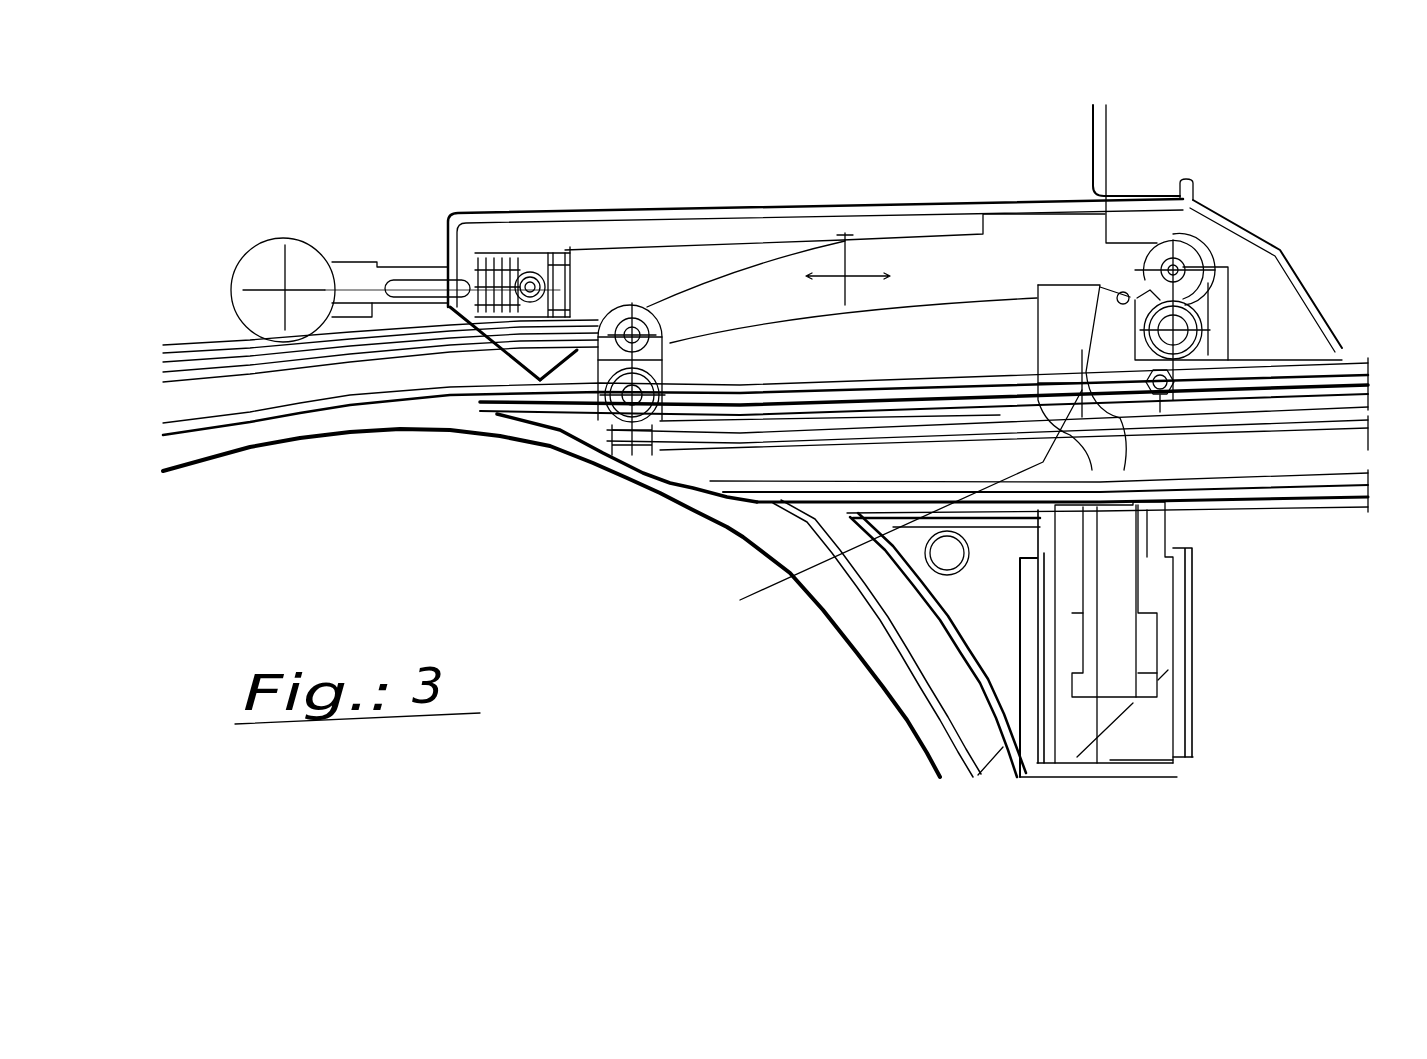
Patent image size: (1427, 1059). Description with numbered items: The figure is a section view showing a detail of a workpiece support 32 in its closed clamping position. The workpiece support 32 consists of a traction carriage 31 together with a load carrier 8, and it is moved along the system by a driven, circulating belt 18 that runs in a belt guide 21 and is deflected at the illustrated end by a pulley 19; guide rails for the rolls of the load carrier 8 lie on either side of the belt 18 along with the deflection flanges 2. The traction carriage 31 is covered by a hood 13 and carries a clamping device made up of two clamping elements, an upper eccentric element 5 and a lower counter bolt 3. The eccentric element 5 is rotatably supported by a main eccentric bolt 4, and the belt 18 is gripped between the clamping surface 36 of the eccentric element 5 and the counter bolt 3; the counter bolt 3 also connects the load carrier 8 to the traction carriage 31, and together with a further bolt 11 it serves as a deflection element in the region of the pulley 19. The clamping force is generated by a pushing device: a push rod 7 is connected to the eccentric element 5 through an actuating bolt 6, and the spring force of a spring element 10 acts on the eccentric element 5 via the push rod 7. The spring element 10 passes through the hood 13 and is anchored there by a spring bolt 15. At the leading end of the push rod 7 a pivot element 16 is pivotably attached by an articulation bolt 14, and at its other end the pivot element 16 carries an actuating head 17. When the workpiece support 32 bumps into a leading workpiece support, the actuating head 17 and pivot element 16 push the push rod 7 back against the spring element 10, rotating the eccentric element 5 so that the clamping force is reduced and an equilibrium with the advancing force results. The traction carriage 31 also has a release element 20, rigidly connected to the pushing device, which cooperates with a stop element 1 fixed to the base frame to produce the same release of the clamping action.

The stop element 1 is at (1117, 667).
The deflection flange 2 is at (1247, 553).
The counter bolt 3 is at (1160, 385).
The main eccentric bolt 4 is at (1205, 327).
The eccentric element 5 is at (1200, 277).
The actuating bolt 6 is at (1187, 260).
The push rod 7 is at (1165, 230).
The load carrier 8 is at (1098, 148).
The spring element 10 is at (581, 305).
The bolt 11 is at (612, 408).
The hood 13 is at (568, 213).
The articulation bolt 14 is at (490, 250).
The spring bolt 15 is at (443, 277).
The pivot element 16 is at (353, 288).
The actuating head 17 is at (288, 290).
The belt 18 is at (748, 397).
The pulley 19 is at (783, 377).
The release element 20 is at (737, 522).
The belt guide 21 is at (1043, 462).
The traction carriage 31 is at (927, 223).
The workpiece support 32 is at (836, 152).
The clamping surface 36 is at (1227, 347).